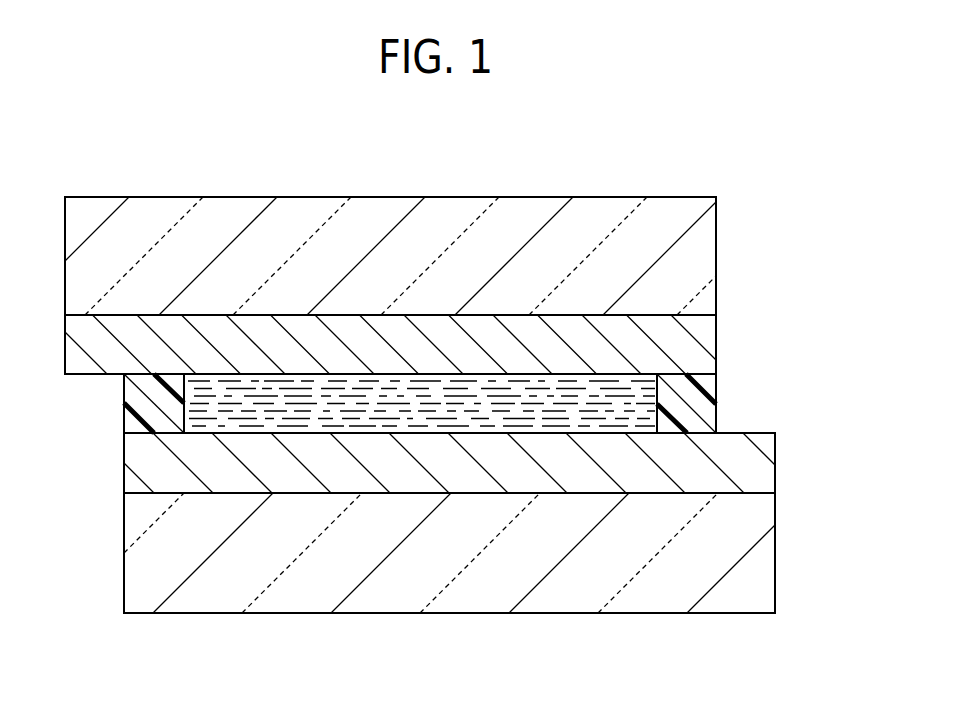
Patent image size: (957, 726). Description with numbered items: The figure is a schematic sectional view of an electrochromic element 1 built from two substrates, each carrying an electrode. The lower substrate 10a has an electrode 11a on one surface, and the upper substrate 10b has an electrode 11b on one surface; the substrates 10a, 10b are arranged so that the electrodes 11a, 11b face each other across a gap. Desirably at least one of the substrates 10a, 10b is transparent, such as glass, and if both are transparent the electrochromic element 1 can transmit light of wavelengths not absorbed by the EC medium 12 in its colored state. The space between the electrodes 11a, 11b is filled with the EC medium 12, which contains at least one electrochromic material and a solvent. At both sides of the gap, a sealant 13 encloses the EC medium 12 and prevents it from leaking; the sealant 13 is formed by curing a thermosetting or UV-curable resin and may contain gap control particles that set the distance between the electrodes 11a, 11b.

The electrochromic element 1 is at (600, 162).
The substrate 10a is at (752, 577).
The substrate 10b is at (693, 240).
The electrode 11a is at (735, 463).
The electrode 11b is at (677, 345).
The EC medium 12 is at (398, 408).
The sealant 13 is at (140, 403).